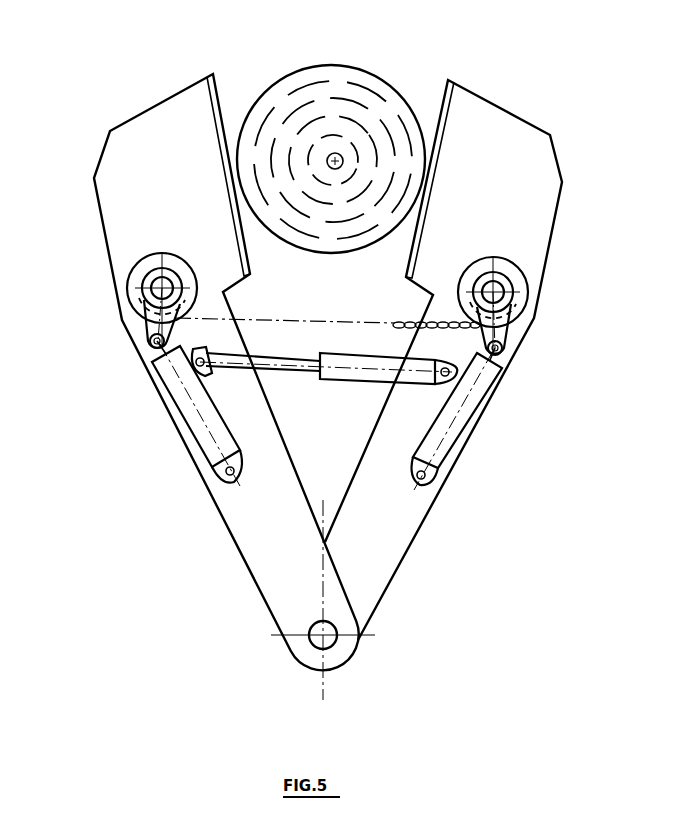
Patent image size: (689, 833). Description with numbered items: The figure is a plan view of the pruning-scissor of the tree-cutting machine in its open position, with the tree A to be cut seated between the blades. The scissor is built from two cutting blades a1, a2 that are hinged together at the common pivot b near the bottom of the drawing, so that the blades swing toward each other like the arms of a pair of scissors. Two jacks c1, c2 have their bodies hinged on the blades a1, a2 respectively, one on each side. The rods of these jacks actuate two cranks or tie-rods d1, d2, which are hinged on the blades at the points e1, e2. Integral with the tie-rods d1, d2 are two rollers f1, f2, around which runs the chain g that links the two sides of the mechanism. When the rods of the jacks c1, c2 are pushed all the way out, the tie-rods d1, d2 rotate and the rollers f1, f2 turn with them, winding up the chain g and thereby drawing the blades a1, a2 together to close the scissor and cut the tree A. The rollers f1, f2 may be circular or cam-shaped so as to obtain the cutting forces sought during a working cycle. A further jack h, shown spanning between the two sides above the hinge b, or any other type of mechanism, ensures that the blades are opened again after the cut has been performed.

The tree A is at (362, 104).
The cutting blade a1 is at (247, 522).
The cutting blade a2 is at (396, 527).
The hinge b is at (334, 649).
The jack c1 is at (215, 463).
The jack c2 is at (448, 450).
The crank or tie-rod d1 is at (148, 333).
The crank or tie-rod d2 is at (505, 338).
The hinge of tie-rod e1 is at (150, 289).
The hinge of tie-rod e2 is at (507, 288).
The roller f1 is at (134, 259).
The roller f2 is at (519, 259).
The chain g is at (312, 320).
The jack h is at (353, 367).